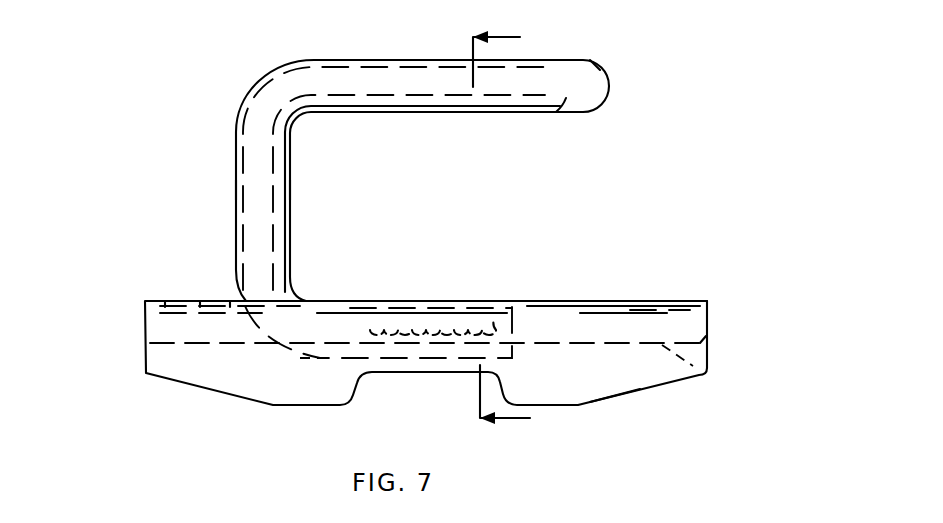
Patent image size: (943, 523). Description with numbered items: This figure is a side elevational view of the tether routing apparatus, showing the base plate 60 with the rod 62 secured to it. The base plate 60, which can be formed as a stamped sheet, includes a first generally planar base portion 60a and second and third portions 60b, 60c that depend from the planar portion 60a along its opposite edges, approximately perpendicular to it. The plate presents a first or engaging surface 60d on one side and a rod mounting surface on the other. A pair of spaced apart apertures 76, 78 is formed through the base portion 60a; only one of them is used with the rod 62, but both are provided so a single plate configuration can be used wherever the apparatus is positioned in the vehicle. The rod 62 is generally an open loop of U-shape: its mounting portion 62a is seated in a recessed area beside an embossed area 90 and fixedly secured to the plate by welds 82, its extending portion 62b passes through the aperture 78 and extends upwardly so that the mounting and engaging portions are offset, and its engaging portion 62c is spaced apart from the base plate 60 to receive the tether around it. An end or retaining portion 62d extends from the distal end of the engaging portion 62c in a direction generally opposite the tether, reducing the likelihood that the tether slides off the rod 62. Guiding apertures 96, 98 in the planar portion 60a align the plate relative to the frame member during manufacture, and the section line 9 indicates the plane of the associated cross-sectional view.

The section line 9 is at (514, 233).
The base plate 60 is at (140, 377).
The first generally planar base portion 60a is at (697, 299).
The second portion 60b is at (617, 376).
The third portion 60c is at (706, 381).
The first or engaging surface 60d is at (581, 299).
The rod 62 is at (228, 129).
The mounting portion 62a is at (395, 345).
The extending portion 62b is at (243, 187).
The engaging portion 62c is at (418, 99).
The end or retaining portion 62d is at (608, 73).
The aperture 76 is at (608, 300).
The aperture 78 is at (322, 300).
The welds 82 is at (427, 332).
The embossed area 90 is at (363, 327).
The guiding aperture 96 is at (183, 300).
The guiding aperture 98 is at (688, 297).